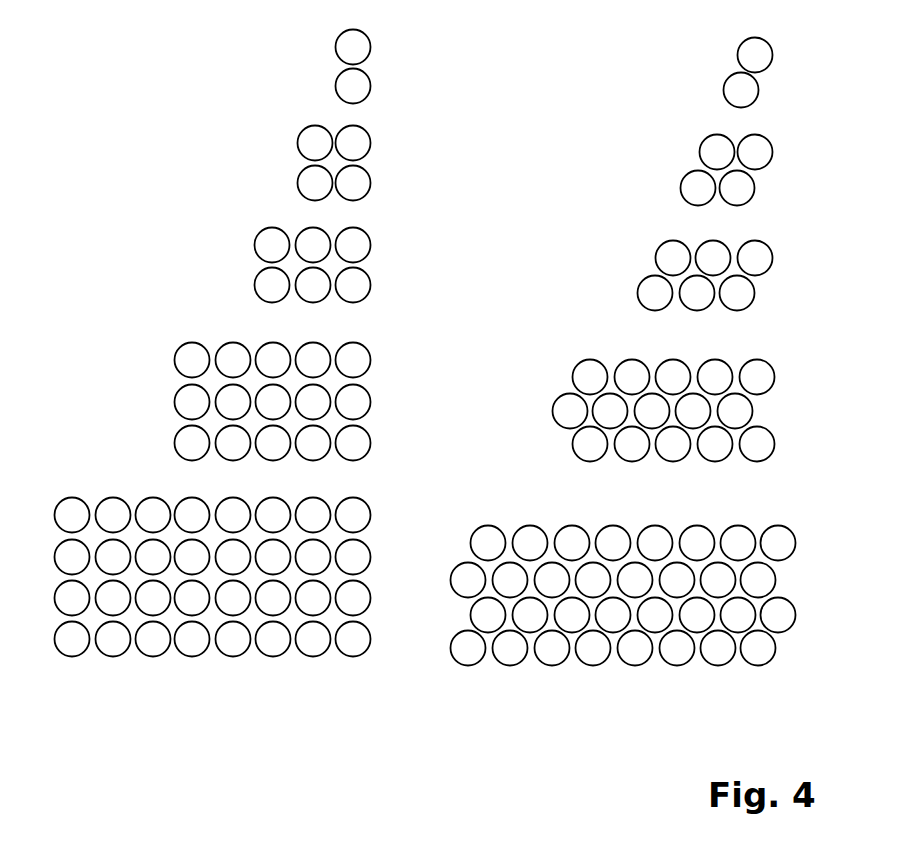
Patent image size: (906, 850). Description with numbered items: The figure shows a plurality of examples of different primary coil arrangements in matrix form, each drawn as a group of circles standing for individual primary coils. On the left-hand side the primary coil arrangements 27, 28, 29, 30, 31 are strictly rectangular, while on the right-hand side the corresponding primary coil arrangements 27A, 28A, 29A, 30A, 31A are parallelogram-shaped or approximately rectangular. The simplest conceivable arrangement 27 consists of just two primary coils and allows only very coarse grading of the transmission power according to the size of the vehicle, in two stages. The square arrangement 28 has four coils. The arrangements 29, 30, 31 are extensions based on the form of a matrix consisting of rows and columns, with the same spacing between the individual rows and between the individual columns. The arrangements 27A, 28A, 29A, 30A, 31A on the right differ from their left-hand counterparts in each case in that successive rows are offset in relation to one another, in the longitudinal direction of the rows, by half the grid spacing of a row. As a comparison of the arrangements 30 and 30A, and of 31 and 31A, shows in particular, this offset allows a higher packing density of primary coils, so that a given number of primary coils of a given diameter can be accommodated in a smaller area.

The primary coil arrangement 27 is at (320, 50).
The primary coil arrangement 28 is at (275, 137).
The primary coil arrangement 29 is at (237, 240).
The primary coil arrangement 30 is at (153, 348).
The primary coil arrangement 31 is at (142, 473).
The primary coil arrangement 27A is at (705, 52).
The primary coil arrangement 28A is at (672, 135).
The primary coil arrangement 29A is at (620, 240).
The primary coil arrangement 30A is at (570, 350).
The primary coil arrangement 31A is at (570, 502).